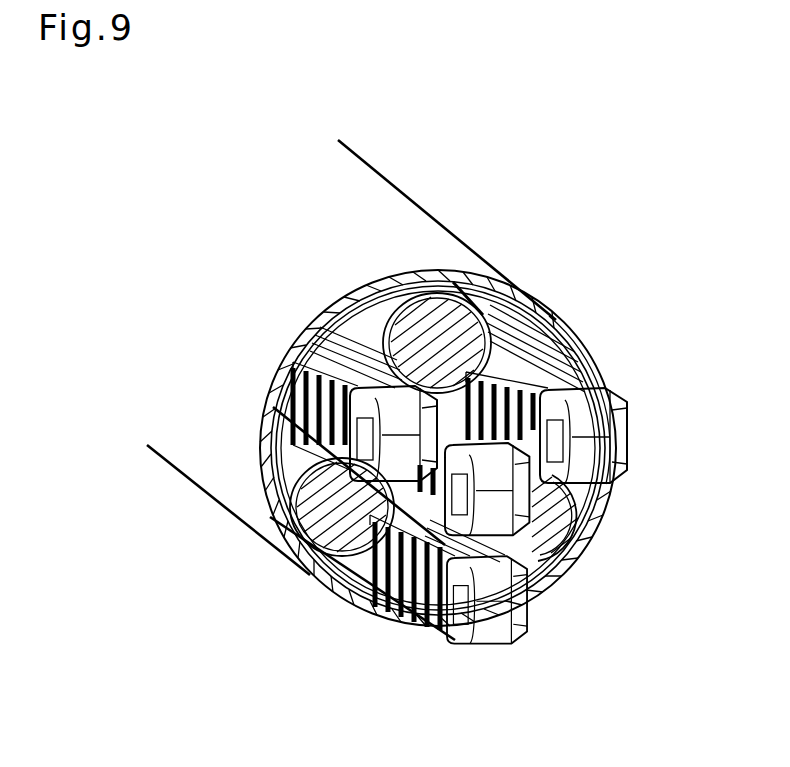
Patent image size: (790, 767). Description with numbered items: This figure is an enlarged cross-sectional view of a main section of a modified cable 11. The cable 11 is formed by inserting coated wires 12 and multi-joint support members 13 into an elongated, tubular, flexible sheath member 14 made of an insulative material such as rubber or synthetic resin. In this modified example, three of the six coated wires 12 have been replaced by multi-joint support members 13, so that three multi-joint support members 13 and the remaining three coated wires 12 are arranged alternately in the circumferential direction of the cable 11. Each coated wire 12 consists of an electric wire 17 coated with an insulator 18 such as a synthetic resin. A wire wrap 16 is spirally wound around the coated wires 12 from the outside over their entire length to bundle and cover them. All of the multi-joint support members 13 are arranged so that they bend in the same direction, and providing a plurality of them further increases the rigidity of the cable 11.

The cable 11 is at (591, 221).
The coated wire 12 is at (438, 386).
The multi-joint support member 13 is at (330, 376).
The sheath member 14 is at (376, 172).
The wire wrap 16 is at (375, 308).
The electric wire 17 is at (455, 295).
The insulator 18 is at (495, 302).